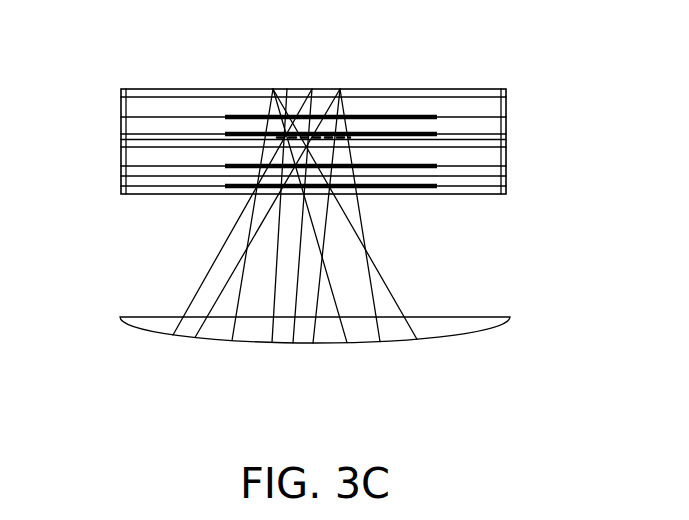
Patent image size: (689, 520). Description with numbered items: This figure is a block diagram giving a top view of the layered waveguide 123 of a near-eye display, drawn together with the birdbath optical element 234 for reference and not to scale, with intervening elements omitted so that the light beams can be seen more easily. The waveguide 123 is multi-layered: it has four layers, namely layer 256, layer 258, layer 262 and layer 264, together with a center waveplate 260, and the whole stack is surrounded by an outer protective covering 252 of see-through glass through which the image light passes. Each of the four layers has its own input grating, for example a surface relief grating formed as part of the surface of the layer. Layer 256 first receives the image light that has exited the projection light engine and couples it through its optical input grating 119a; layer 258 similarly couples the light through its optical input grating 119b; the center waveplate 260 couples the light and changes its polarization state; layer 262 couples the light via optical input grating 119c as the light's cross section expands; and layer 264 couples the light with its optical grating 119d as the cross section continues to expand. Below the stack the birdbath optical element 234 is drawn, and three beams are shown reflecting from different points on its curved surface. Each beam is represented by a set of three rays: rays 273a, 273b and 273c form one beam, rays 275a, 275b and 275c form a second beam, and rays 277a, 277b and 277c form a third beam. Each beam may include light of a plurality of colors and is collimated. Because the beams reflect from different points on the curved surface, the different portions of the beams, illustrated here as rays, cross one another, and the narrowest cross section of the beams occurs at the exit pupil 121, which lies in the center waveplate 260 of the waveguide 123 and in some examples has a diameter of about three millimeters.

The waveguide 123 is at (499, 80).
The outer protective covering 252 is at (200, 88).
The layer 264 is at (494, 112).
The layer 262 is at (122, 123).
The center waveplate 260 is at (498, 141).
The layer 258 is at (137, 158).
The layer 256 is at (494, 177).
The optical grating 119d is at (407, 114).
The optical input grating 119c is at (407, 131).
The optical input grating 119b is at (407, 163).
The optical input grating 119a is at (407, 183).
The exit pupil 121 is at (343, 137).
The birdbath optical element 234 is at (165, 342).
The ray 277a is at (265, 272).
The ray 277b is at (220, 287).
The ray 277c is at (187, 305).
The ray 275a is at (273, 343).
The ray 275b is at (295, 343).
The ray 275c is at (315, 343).
The ray 273a is at (337, 306).
The ray 273b is at (360, 279).
The ray 273c is at (377, 236).